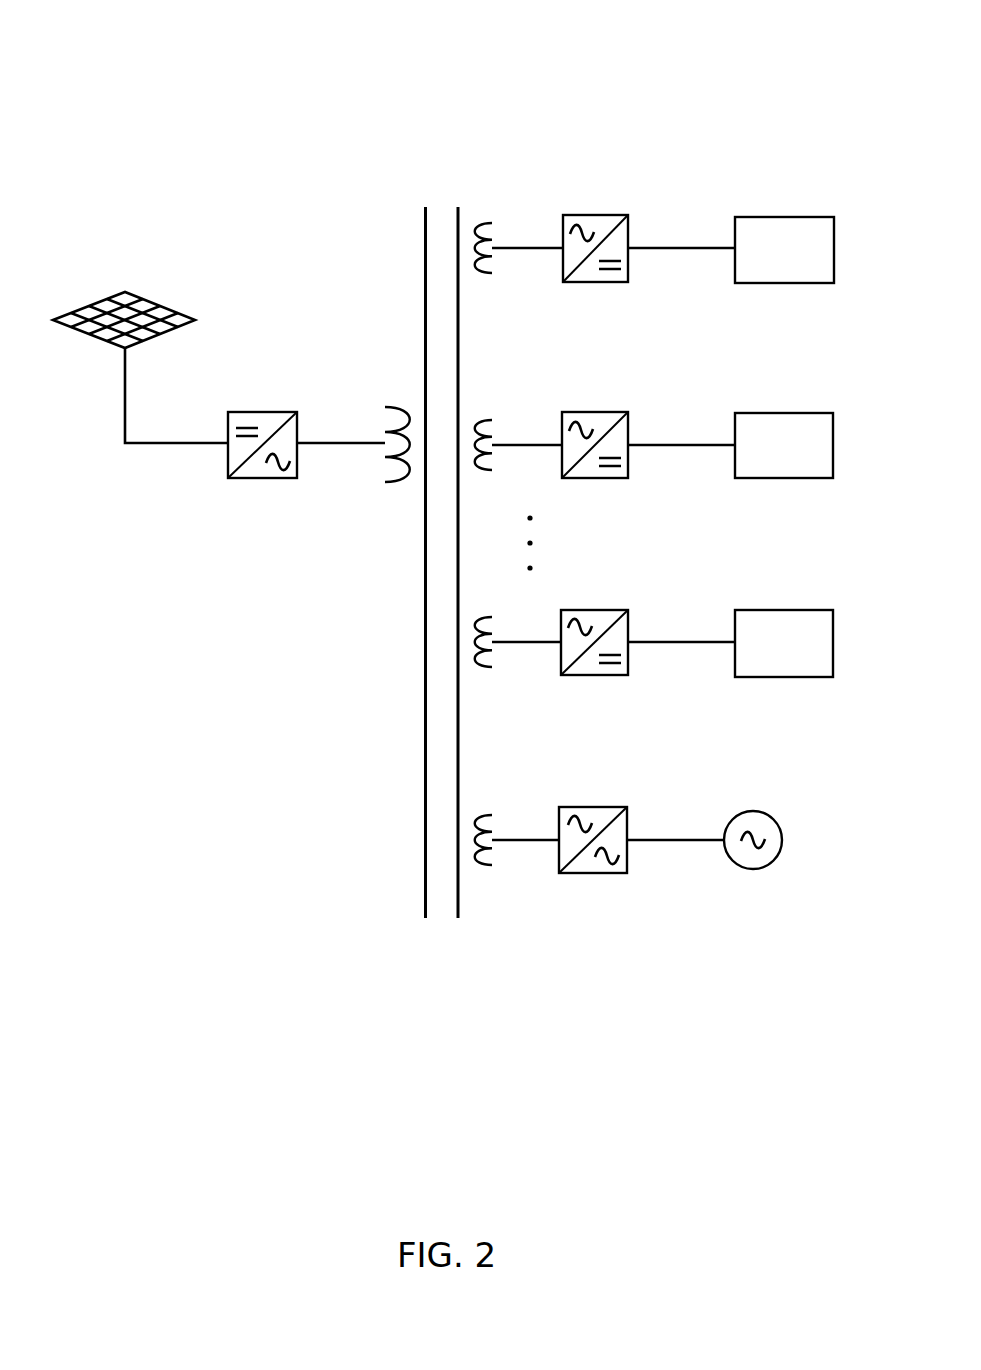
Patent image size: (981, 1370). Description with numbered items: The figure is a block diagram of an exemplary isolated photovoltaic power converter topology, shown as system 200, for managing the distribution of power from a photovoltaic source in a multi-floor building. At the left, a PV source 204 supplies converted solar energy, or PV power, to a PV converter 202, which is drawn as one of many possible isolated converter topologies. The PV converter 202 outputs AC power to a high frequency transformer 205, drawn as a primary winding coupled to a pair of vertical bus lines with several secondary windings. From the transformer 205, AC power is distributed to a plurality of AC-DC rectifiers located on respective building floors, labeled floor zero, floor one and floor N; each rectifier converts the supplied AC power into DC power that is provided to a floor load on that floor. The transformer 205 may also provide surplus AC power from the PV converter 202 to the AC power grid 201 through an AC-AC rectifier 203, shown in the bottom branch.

The system 200 is at (762, 72).
The AC power grid 201 is at (761, 811).
The PV converter 202 is at (257, 412).
The AC-AC rectifier 203 is at (587, 806).
The PV source 204 is at (152, 300).
The high frequency transformer 205 is at (445, 196).